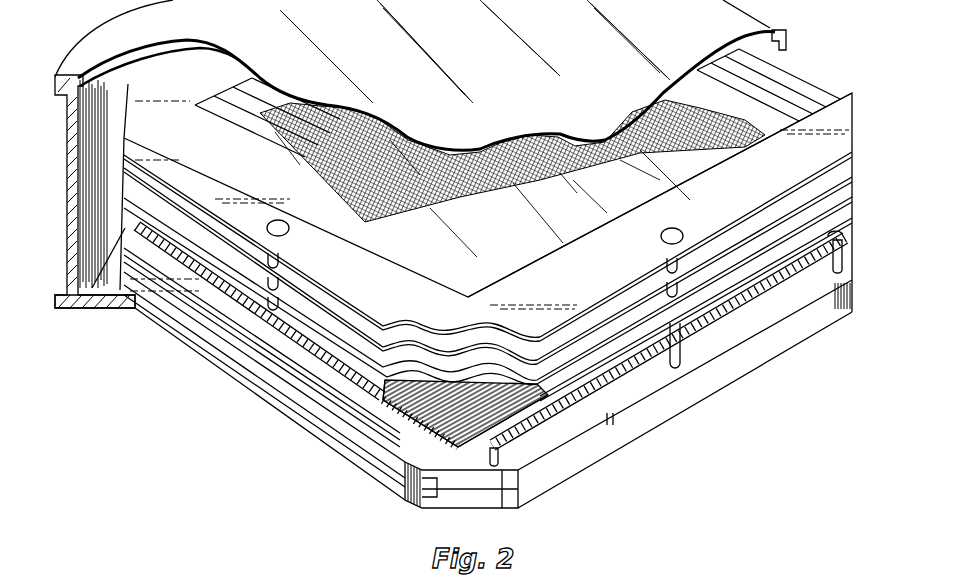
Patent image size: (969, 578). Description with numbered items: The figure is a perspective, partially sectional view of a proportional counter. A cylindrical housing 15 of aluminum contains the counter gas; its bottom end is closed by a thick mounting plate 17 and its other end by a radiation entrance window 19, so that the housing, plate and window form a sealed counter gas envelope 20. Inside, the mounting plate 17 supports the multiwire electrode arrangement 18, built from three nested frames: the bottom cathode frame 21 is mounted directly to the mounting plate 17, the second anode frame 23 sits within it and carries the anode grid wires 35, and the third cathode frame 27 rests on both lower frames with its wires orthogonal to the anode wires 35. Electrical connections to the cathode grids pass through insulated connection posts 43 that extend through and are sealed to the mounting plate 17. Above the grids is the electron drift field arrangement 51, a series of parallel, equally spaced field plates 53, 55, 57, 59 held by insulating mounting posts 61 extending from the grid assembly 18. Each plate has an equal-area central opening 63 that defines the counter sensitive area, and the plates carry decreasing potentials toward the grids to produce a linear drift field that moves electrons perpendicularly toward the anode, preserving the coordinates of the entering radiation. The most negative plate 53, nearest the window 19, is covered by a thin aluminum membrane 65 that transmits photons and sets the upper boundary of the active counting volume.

The cylindrical housing 15 is at (62, 253).
The mounting plate 17 is at (116, 296).
The electrode arrangement 18 is at (283, 411).
The radiation entrance window 19 is at (345, 26).
The counter gas envelope 20 is at (110, 102).
The bottom cathode multiwire electrode frame 21 is at (550, 485).
The second anode electrode frame 23 is at (370, 428).
The third cathode frame 27 is at (625, 409).
The anode grid wires 35 is at (427, 407).
The insulated connection post 43 is at (500, 453).
The electron drift field arrangement 51 is at (832, 72).
The field plate 53 is at (361, 266).
The field plate 55 is at (375, 330).
The field plate 57 is at (277, 358).
The field plate 59 is at (242, 293).
The insulating mounting post 61 is at (673, 360).
The central opening 63 is at (247, 88).
The aluminum membrane 65 is at (504, 236).